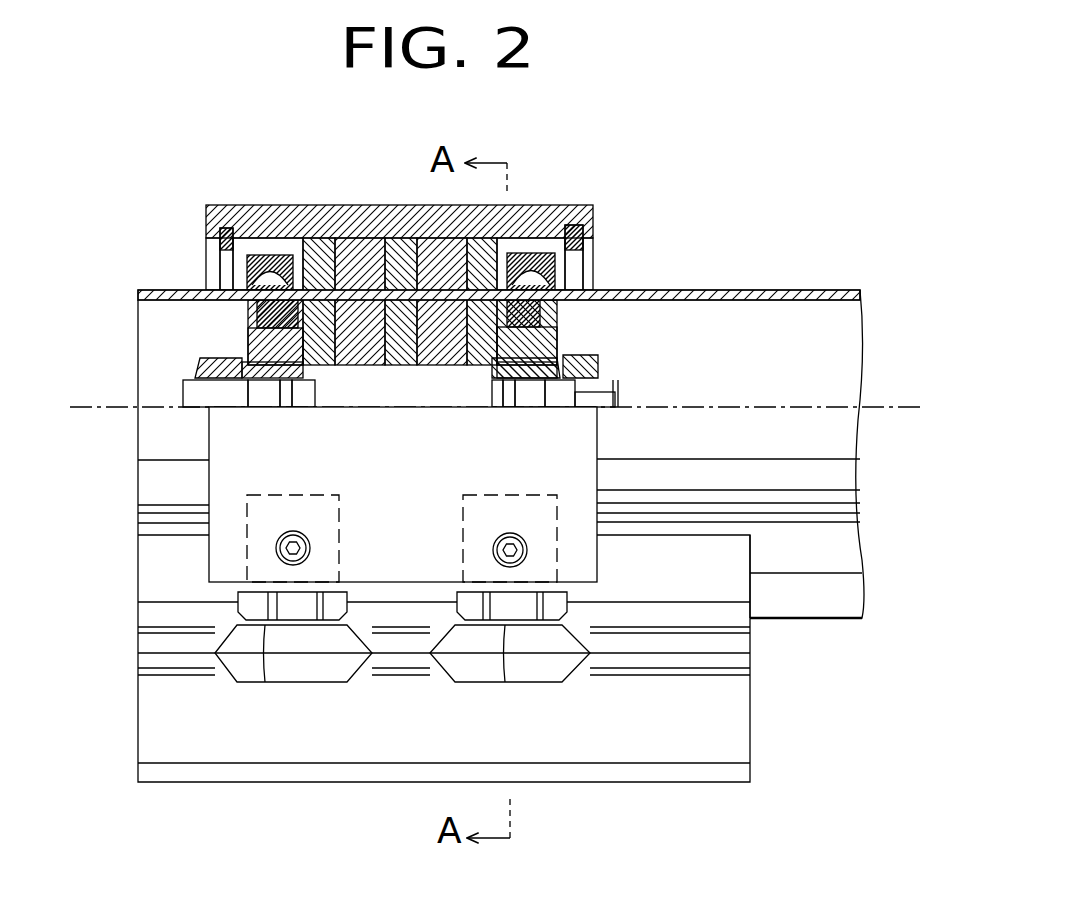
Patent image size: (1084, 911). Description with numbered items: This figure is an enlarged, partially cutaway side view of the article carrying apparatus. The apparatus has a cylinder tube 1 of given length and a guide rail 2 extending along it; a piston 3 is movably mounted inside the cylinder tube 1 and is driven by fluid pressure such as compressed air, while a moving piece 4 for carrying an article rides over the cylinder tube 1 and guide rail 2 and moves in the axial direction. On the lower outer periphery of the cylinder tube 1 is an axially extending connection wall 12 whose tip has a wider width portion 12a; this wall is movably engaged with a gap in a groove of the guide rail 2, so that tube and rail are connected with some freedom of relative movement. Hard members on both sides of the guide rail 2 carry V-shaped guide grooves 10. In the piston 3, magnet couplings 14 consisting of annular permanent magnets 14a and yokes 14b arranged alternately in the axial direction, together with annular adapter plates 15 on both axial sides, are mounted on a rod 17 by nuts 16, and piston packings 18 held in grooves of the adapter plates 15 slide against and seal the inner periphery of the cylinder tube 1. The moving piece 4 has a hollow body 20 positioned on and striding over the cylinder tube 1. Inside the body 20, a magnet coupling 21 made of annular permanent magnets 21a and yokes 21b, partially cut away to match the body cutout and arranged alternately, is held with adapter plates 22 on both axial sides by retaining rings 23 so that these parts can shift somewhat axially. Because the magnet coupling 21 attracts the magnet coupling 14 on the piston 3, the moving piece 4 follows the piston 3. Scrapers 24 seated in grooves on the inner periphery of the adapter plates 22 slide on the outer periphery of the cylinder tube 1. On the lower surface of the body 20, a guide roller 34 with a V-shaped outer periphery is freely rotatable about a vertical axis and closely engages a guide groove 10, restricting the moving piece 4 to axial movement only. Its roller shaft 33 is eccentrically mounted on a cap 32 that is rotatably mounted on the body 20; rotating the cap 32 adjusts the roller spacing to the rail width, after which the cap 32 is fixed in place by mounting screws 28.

The cylinder tube 1 is at (748, 285).
The guide rail 2 is at (692, 792).
The piston 3 is at (193, 361).
The moving piece 4 is at (320, 200).
The V-shaped guide grooves 10 is at (165, 652).
The connection wall 12 is at (848, 540).
The wider width portion 12a is at (840, 610).
The magnet couplings 14 is at (379, 415).
The annular permanent magnets 14a is at (360, 365).
The yokes 14b is at (330, 365).
The annular adapter plates 15 is at (260, 340).
The nuts 16 is at (200, 368).
The rod 17 is at (625, 398).
The piston packings 18 is at (268, 318).
The hollow body 20 is at (270, 215).
The magnet coupling 21 is at (400, 223).
The annular permanent magnets 21a is at (418, 205).
The yokes 21b is at (405, 205).
The adapter plates 22 is at (240, 252).
The retaining rings 23 is at (226, 230).
The scrapers 24 is at (252, 285).
The mounting screws 28 is at (280, 548).
The cap 32 is at (247, 515).
The roller shaft 33 is at (265, 620).
The guide roller 34 is at (315, 655).